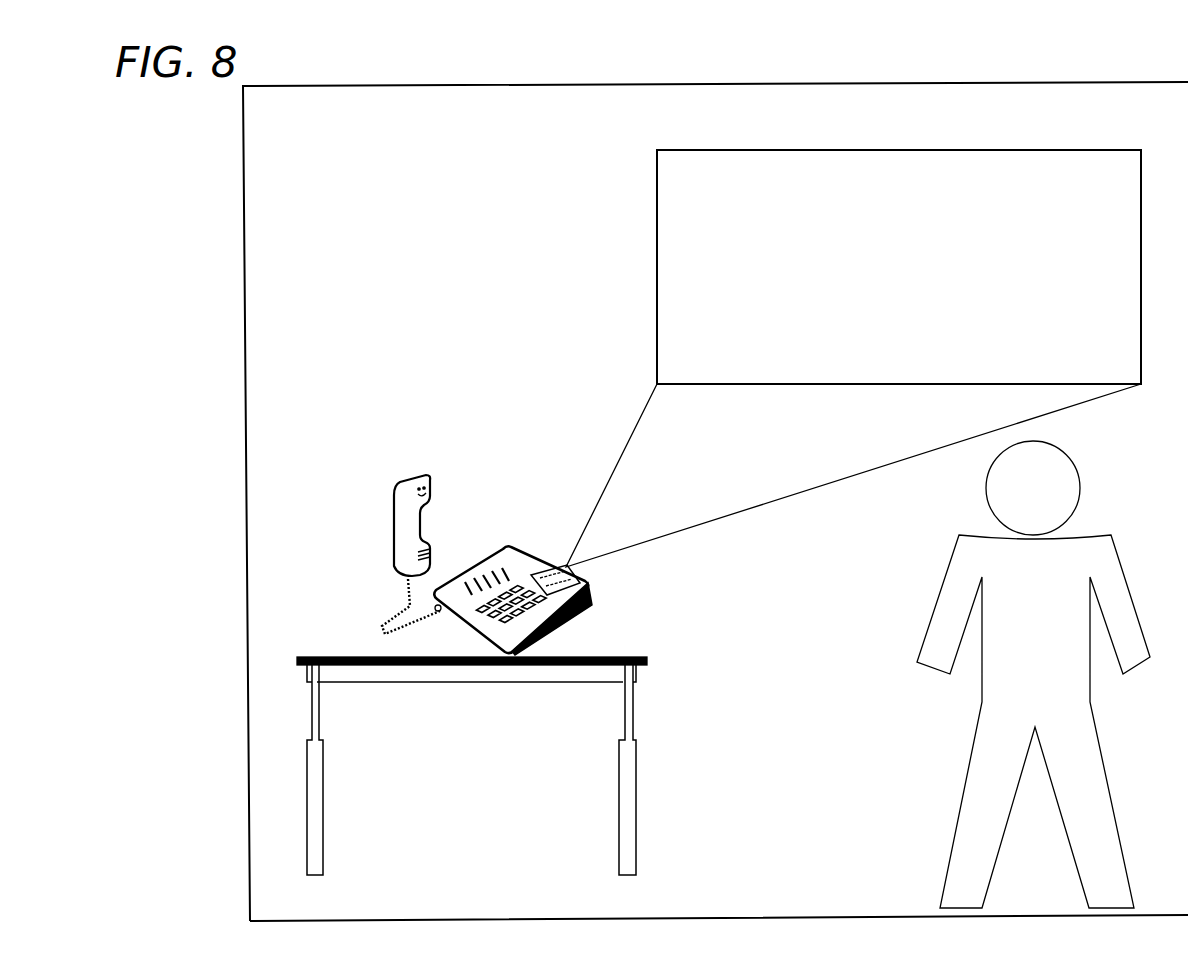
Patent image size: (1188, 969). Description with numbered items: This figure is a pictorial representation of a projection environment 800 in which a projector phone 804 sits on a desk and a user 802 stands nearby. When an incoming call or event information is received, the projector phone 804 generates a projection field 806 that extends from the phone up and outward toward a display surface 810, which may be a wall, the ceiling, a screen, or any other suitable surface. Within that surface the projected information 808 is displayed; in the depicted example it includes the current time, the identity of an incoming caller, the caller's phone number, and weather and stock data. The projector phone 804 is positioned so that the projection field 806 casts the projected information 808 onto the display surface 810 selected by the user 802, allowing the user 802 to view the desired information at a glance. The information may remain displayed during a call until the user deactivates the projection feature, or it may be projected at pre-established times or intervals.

The projection environment 800 is at (415, 183).
The user 802 is at (1052, 489).
The projector phone 804 is at (540, 560).
The projection field 806 is at (655, 543).
The projected information 808 is at (667, 155).
The display surface 810 is at (824, 151).